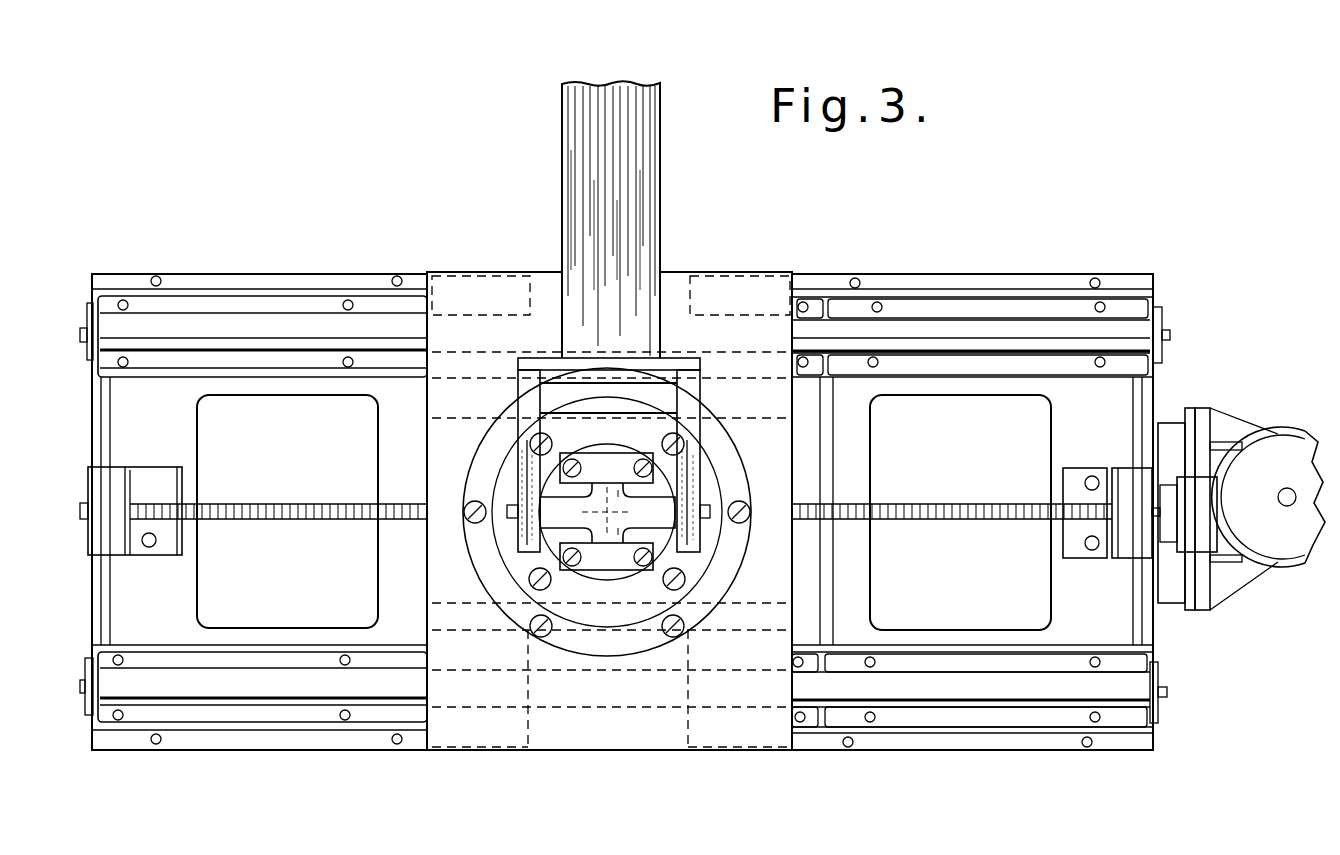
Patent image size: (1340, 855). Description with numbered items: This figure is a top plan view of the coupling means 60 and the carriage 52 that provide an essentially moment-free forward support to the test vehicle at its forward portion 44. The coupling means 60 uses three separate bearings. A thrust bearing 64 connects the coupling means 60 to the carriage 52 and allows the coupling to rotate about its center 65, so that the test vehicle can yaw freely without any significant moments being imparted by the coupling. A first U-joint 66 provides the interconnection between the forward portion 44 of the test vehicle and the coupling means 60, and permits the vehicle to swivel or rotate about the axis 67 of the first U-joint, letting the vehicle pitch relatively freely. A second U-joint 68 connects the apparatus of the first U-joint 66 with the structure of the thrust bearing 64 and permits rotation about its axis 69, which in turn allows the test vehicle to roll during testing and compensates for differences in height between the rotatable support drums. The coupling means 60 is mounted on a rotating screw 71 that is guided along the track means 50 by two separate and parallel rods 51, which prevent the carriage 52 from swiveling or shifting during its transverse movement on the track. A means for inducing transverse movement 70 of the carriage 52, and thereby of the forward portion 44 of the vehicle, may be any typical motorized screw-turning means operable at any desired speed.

The forward portion 44 is at (660, 130).
The coupling means 60 is at (700, 222).
The carriage 52 is at (668, 345).
The track means 50 is at (965, 312).
The parallel rods 51 is at (1028, 318).
The thrust bearing 64 is at (510, 450).
The center 65 is at (603, 513).
The first U-joint 66 is at (702, 512).
The axis 67 is at (703, 508).
The second U-joint 68 is at (607, 453).
The axis 69 is at (625, 528).
The means for inducing transverse movement 70 is at (1288, 430).
The rotating screw 71 is at (1000, 508).